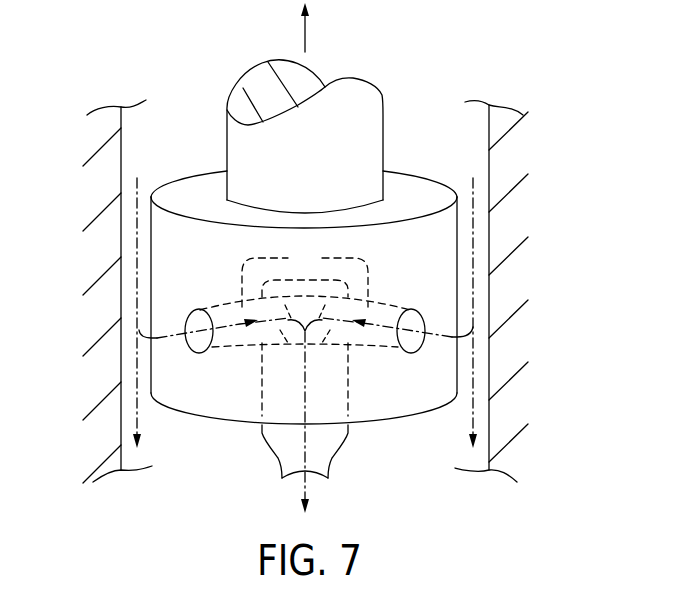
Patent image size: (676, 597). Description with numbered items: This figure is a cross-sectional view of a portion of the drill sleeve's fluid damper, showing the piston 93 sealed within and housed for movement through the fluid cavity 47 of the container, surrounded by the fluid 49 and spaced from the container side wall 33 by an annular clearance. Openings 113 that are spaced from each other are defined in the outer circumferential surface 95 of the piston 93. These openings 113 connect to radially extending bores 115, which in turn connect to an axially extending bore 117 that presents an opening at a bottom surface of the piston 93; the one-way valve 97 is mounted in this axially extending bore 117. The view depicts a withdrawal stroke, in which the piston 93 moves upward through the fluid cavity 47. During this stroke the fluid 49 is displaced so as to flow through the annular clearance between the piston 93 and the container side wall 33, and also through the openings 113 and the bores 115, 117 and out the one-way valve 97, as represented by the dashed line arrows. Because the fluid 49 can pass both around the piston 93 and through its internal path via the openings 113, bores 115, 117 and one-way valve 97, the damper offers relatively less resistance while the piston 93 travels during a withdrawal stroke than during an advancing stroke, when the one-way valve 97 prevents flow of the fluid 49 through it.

The container side wall 33 is at (489, 288).
The fluid cavity 47 is at (447, 110).
The fluid 49 is at (482, 167).
The piston 93 is at (222, 434).
The outer circumferential surface 95 is at (412, 232).
The one-way valve 97 is at (332, 450).
The openings 113 is at (195, 325).
The radially extending bores 115 is at (305, 297).
The axially extending bore 117 is at (278, 376).